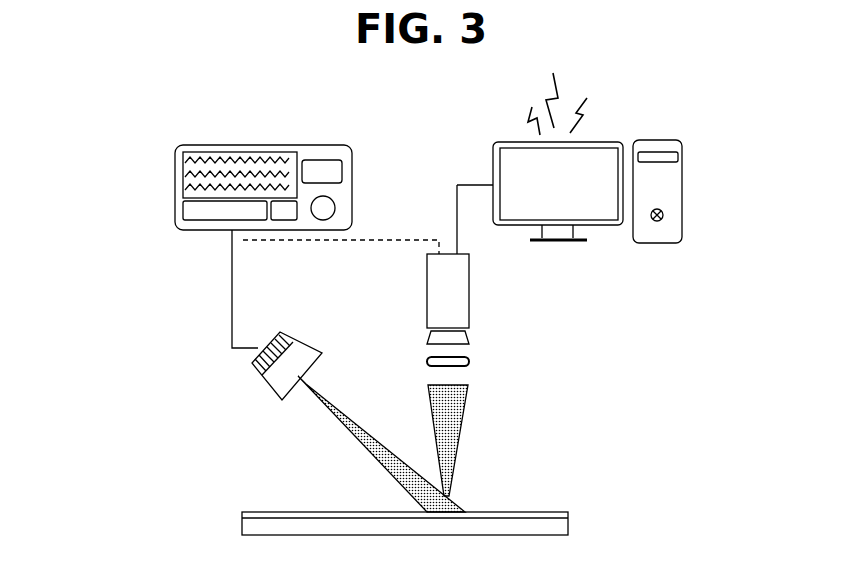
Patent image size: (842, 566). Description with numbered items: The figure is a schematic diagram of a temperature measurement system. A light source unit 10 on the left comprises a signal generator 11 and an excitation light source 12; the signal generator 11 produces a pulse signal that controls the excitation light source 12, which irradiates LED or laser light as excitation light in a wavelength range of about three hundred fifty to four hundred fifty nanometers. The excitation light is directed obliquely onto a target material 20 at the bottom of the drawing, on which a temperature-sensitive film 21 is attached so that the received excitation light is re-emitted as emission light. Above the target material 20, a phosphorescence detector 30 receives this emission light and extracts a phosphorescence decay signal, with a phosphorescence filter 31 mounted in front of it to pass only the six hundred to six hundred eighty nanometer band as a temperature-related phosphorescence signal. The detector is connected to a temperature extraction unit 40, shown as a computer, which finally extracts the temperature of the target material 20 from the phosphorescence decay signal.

The light source unit 10 is at (68, 162).
The signal generator 11 is at (175, 178).
The excitation light source 12 is at (254, 366).
The target material 20 is at (460, 523).
The temperature-sensitive film 21 is at (568, 512).
The phosphorescence detector 30 is at (470, 315).
The phosphorescence filter 31 is at (470, 360).
The temperature extraction unit 40 is at (682, 203).